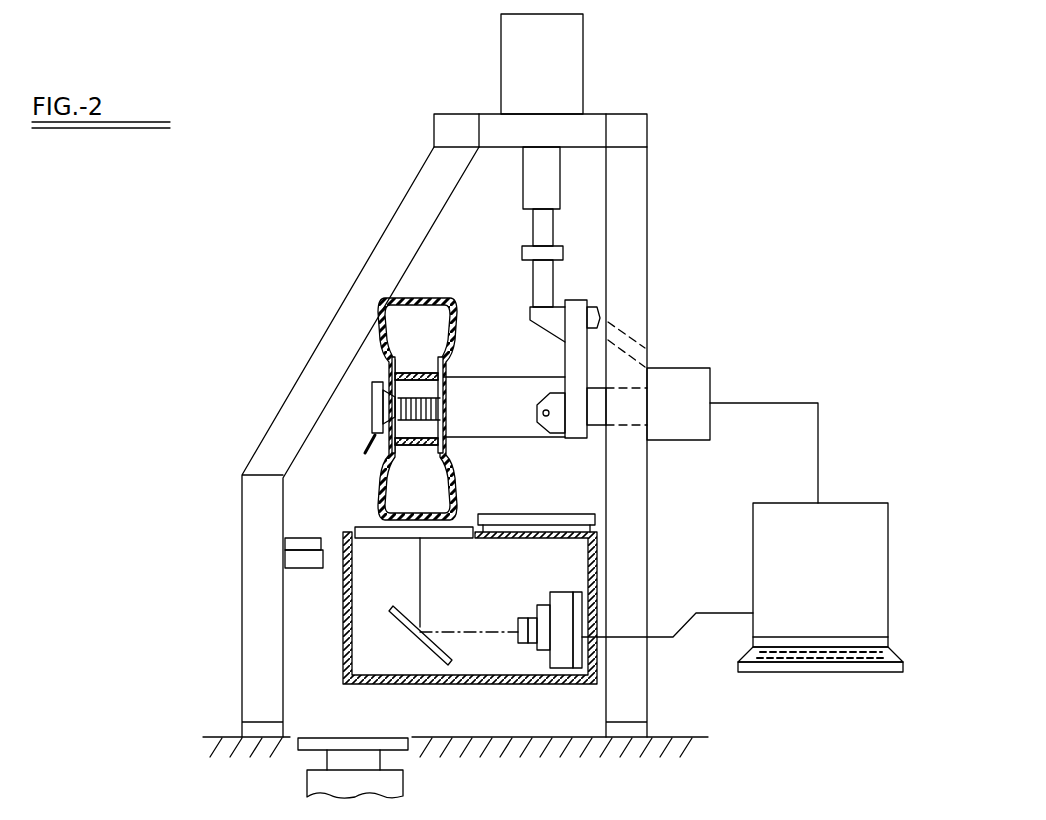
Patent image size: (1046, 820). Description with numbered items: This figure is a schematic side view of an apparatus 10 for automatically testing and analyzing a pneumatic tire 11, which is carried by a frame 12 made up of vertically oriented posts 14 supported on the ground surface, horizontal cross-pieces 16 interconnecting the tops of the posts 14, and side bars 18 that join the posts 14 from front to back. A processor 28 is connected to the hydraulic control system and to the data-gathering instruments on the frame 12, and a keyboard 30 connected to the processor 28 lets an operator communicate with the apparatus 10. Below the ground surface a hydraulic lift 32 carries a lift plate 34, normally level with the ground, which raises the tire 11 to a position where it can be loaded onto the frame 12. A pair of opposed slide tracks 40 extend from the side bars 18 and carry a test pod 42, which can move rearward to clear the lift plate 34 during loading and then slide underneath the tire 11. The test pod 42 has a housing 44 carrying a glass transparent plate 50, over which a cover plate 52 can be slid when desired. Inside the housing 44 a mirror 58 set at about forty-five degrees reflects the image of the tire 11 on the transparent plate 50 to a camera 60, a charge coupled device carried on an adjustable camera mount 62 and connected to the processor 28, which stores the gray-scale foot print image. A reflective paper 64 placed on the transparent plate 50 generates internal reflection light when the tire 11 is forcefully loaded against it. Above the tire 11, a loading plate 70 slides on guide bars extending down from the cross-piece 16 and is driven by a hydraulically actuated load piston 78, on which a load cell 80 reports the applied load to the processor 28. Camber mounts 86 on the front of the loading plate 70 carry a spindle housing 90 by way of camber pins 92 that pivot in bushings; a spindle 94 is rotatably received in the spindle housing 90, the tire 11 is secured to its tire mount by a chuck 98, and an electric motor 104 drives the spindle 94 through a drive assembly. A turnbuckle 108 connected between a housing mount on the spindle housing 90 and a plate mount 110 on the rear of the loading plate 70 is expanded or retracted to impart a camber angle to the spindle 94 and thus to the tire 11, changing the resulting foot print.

The apparatus 10 is at (270, 228).
The pneumatic tire 11 is at (378, 338).
The frame 12 is at (652, 160).
The posts 14 is at (412, 187).
The cross-pieces 16 is at (607, 113).
The side bars 18 is at (287, 567).
The processor 28 is at (838, 592).
The keyboard 30 is at (223, 814).
The hydraulic lift 32 is at (315, 781).
The lift plate 34 is at (333, 740).
The slide tracks 40 is at (287, 540).
The test pod 42 is at (338, 613).
The housing 44 is at (343, 660).
The transparent plate 50 is at (465, 513).
The cover plate 52 is at (583, 515).
The mirror 58 is at (445, 667).
The camera 60 is at (520, 618).
The camera mount 62 is at (563, 668).
The reflective paper 64 is at (383, 522).
The loading plate 70 is at (558, 352).
The load piston 78 is at (533, 232).
The load cell 80 is at (563, 253).
The camber mounts 86 is at (552, 394).
The spindle housing 90 is at (495, 440).
The camber pins 92 is at (538, 413).
The spindle 94 is at (398, 410).
The chuck 98 is at (372, 395).
The electric motor 104 is at (693, 368).
The turnbuckle 108 is at (662, 346).
The plate mount 110 is at (592, 305).